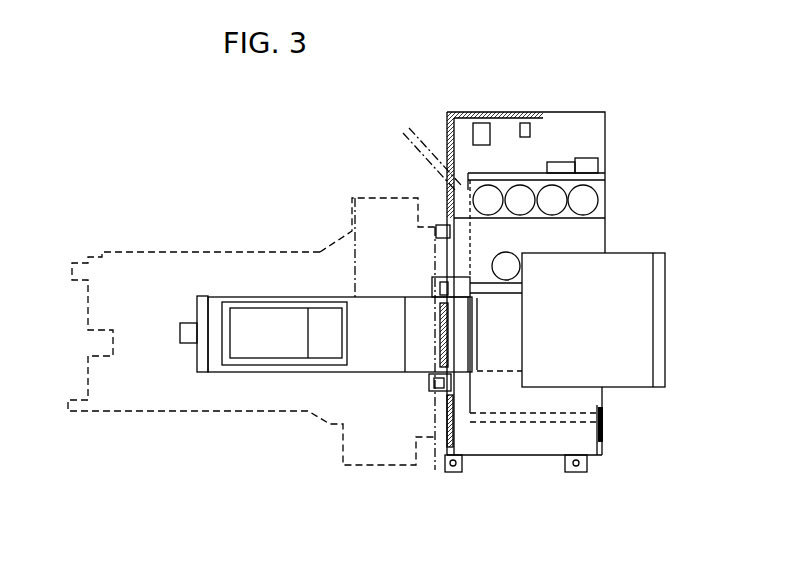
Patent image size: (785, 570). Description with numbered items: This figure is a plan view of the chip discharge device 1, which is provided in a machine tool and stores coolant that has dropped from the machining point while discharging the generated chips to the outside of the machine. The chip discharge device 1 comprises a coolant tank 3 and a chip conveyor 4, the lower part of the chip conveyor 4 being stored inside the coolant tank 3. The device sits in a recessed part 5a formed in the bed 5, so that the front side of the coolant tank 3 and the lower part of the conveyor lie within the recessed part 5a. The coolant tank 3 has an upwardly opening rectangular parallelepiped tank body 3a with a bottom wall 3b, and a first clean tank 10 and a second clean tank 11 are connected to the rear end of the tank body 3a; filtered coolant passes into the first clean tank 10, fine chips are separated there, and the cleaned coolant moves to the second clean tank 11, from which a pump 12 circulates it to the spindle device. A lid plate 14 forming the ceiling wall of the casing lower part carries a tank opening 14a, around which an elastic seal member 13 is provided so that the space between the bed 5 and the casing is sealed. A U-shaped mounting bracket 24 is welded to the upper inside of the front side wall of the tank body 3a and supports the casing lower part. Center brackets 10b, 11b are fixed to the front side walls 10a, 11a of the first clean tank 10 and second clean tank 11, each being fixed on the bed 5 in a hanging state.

The chip discharge device 1 is at (612, 91).
The coolant tank 3 is at (247, 262).
The tank body 3a is at (278, 378).
The bottom wall 3b is at (296, 345).
The chip conveyor 4 is at (650, 250).
The bed 5 is at (133, 241).
The recessed part 5a is at (351, 197).
The first clean tank 10 is at (525, 458).
The front side wall 10a is at (425, 438).
The center bracket 10b is at (430, 380).
The second clean tank 11 is at (608, 137).
The front side wall 11a is at (440, 257).
The center bracket 11b is at (440, 224).
The pump 12 is at (521, 167).
The seal member 13 is at (297, 301).
The lid plate 14 is at (368, 348).
The tank opening 14a is at (236, 346).
The mounting bracket 24 is at (207, 296).